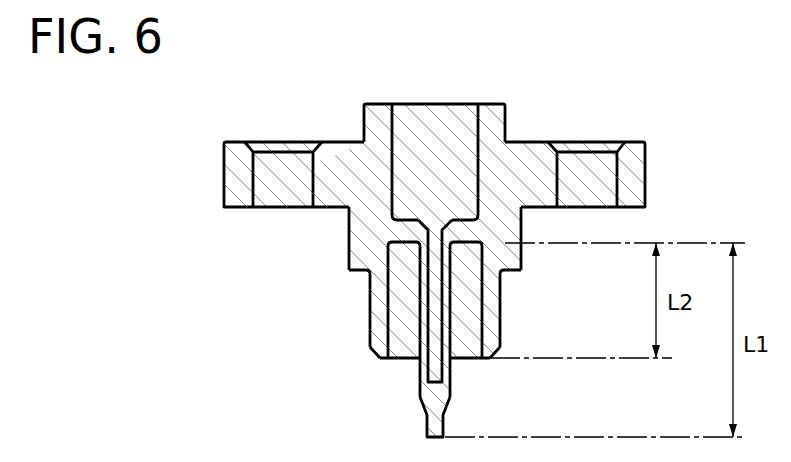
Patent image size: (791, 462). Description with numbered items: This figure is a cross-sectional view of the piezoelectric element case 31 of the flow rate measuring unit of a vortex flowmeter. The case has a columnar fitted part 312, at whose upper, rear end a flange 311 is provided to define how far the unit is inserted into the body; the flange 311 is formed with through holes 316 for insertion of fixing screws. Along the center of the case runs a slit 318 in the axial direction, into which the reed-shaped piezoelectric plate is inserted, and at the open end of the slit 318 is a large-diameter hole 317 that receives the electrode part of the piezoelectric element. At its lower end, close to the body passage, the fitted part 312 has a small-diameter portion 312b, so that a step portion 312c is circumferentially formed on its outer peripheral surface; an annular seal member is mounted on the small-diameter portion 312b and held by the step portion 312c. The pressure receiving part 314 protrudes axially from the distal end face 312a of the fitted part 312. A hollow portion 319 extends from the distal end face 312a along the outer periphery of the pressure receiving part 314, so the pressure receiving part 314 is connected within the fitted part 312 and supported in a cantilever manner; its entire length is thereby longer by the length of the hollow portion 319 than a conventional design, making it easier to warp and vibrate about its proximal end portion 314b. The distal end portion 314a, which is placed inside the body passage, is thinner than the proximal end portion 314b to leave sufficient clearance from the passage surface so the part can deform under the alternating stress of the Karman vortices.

The piezoelectric element case 31 is at (658, 74).
The flange 311 is at (229, 173).
The fitted part 312 is at (349, 253).
The distal end face 312a is at (374, 352).
The small-diameter portion 312b is at (369, 323).
The step portion 312c is at (364, 273).
The pressure receiving part 314 is at (450, 283).
The distal end portion 314a is at (432, 430).
The proximal end portion 314b is at (445, 252).
The through holes 316 is at (283, 163).
The large-diameter hole 317 is at (478, 143).
The slit 318 is at (437, 307).
The hollow portion 319 is at (467, 352).